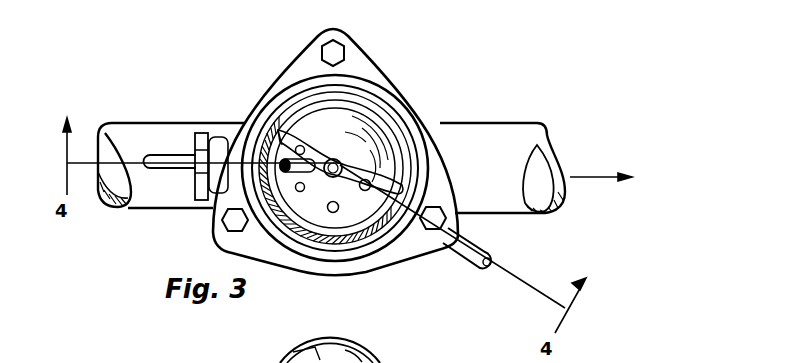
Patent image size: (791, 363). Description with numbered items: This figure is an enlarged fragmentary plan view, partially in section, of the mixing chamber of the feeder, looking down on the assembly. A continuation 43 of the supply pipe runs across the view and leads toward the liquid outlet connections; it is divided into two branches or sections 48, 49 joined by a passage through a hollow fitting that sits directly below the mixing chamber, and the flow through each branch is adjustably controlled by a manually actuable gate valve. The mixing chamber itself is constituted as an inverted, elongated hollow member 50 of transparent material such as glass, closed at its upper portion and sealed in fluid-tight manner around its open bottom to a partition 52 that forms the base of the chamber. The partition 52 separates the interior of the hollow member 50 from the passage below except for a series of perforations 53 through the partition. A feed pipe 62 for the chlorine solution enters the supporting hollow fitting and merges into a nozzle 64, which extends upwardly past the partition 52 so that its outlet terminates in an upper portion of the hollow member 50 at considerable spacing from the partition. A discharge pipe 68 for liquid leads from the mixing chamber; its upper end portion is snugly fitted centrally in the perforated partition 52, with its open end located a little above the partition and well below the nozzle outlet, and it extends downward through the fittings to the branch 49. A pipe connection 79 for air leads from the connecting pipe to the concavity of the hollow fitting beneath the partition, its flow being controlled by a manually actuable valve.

The continuation of the supply pipe 43 is at (157, 132).
The branch or section of the continuation 48 is at (125, 210).
The branch or section of the continuation 49 is at (510, 214).
The hollow member 50 is at (302, 110).
The partition 52 is at (360, 217).
The perforations 53 is at (302, 196).
The feed pipe 62 is at (150, 170).
The nozzle 64 is at (308, 172).
The discharge pipe 68 is at (340, 176).
The pipe connection for air 79 is at (472, 258).